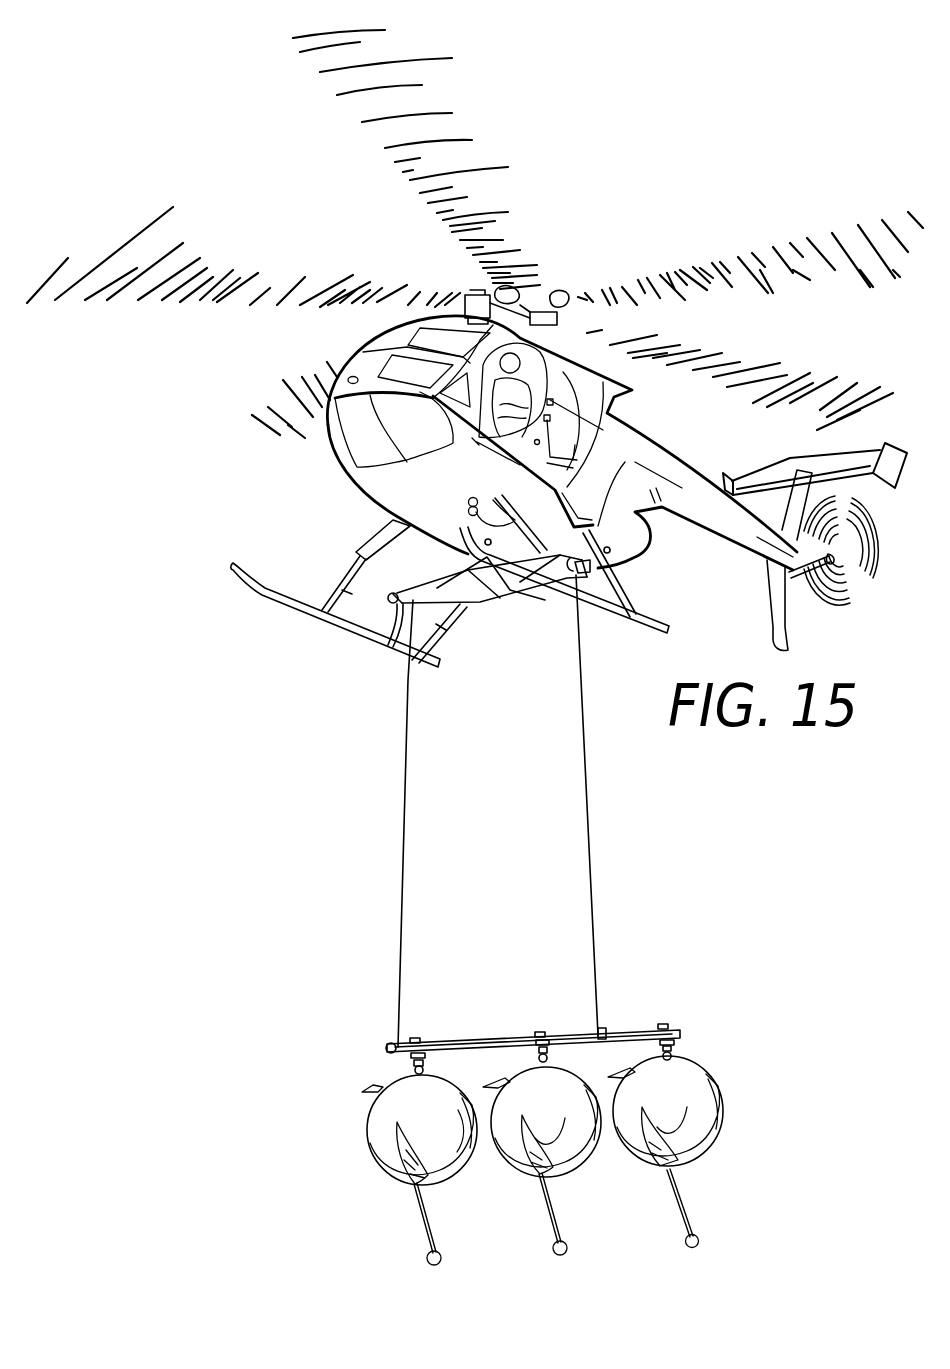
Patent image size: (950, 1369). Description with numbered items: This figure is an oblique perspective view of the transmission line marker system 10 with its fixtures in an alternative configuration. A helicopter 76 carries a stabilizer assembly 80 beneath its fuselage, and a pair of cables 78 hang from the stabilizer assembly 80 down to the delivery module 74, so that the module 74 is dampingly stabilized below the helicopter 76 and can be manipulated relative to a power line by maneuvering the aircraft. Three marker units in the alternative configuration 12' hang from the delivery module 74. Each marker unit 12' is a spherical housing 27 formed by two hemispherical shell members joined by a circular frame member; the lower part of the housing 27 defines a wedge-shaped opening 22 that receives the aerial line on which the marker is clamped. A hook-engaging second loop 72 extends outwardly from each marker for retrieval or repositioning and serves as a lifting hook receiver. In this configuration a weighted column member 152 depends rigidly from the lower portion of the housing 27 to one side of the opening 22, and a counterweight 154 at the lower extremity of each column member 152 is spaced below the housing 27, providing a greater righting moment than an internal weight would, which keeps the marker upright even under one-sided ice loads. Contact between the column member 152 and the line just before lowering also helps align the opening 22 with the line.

The marker system 10 is at (683, 772).
The marker unit in alternative configuration 12' is at (536, 1120).
The wedge-shaped opening 22 is at (403, 1153).
The housing 27 is at (378, 1168).
The second loop 72 is at (380, 1088).
The delivery module 74 is at (683, 1026).
The helicopter 76 is at (378, 498).
The cables 78 is at (405, 868).
The stabilizer assembly 80 is at (487, 598).
The column member 152 is at (422, 1220).
The counterweight 154 is at (427, 1263).